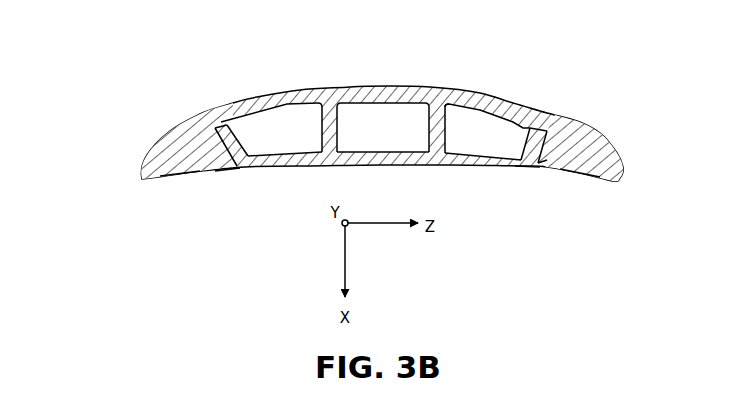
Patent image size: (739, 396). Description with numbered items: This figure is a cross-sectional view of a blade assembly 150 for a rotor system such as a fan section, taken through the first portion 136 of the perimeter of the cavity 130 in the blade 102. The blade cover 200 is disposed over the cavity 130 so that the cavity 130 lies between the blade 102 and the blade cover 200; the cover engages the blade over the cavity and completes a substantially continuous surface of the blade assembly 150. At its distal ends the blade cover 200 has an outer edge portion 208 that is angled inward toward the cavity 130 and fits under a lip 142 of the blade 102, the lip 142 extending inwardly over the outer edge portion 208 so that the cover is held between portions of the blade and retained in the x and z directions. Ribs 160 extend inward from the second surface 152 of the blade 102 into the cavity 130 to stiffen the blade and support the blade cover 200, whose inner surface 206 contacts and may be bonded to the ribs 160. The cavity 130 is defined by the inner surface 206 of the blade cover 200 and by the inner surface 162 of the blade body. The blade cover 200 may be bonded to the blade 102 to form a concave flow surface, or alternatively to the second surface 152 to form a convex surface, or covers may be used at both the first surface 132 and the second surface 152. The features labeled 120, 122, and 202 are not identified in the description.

The blade assembly 150 is at (126, 81).
The first side member 120 is at (142, 173).
The second side member 122 is at (622, 160).
The second surface 152 is at (222, 100).
The cavity 130 is at (482, 118).
The inner surface of blade body 162 is at (362, 104).
The ribs 160 is at (312, 126).
The blade cover 200 is at (302, 170).
The inner surface of blade cover 206 is at (374, 148).
The plate 202 is at (450, 168).
The outer edge portion 208 is at (238, 148).
The lip 142 is at (538, 165).
The first surface 132 is at (175, 182).
The blade 102 is at (585, 177).
The first portion of perimeter 136 is at (229, 181).